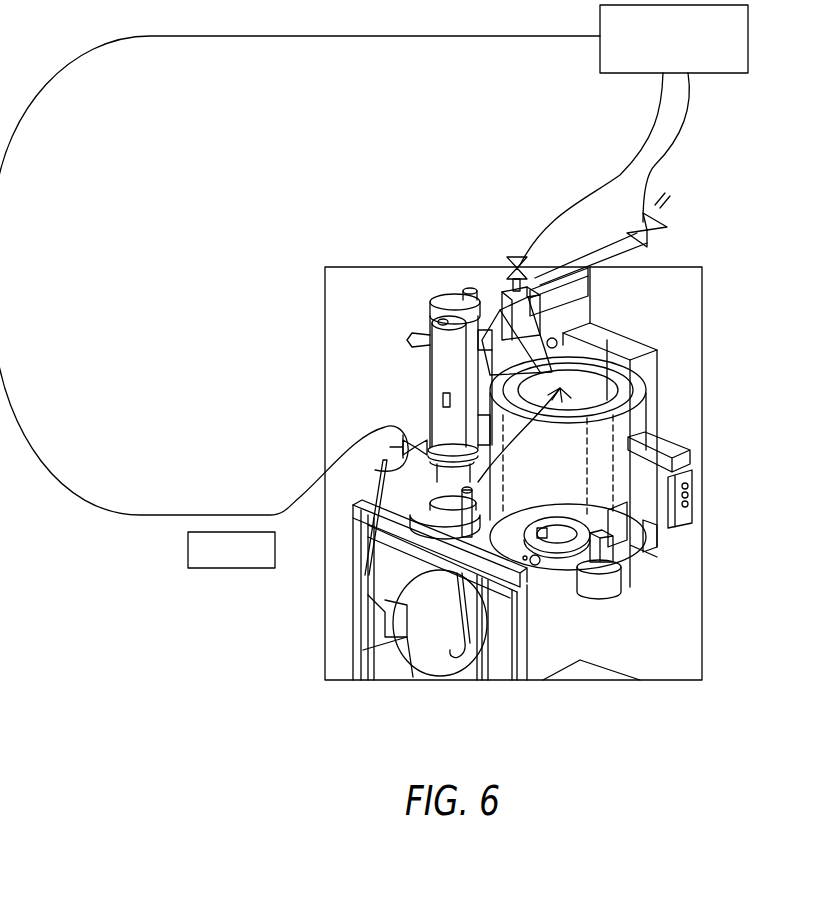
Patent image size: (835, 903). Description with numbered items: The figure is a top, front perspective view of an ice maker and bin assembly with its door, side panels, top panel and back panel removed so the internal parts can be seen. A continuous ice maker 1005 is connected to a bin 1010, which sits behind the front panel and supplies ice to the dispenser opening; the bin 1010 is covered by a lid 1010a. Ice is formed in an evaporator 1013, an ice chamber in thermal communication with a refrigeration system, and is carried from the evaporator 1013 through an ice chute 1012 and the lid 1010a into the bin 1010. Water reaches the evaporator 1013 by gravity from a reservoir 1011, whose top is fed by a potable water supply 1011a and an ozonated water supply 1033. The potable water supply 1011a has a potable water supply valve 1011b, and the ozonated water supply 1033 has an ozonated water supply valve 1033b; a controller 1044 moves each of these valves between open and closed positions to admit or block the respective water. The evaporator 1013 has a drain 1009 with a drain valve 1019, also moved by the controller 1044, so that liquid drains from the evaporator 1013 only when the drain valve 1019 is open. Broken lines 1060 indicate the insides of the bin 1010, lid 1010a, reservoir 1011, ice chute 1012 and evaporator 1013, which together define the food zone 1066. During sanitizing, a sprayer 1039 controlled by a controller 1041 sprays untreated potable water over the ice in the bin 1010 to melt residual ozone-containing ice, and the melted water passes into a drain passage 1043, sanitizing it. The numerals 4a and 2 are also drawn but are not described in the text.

The controller 1044 is at (674, 39).
The potable water supply valve 1011b is at (510, 257).
The reservoir 1011 is at (502, 298).
The potable water supply 1011a is at (540, 283).
The ozonated water supply 1033 is at (667, 206).
The ozonated water supply valve 1033b is at (667, 211).
The ice chute 1012 is at (453, 307).
The continuous ice maker 1005 is at (430, 350).
The broken lines 1060 is at (430, 380).
The evaporator 1013 is at (430, 410).
The drain 1009 is at (413, 440).
The drain valve 1019 is at (400, 457).
The controller 1041 is at (352, 505).
The food zone 1066 is at (427, 480).
The bin 1010 is at (620, 413).
The lid 1010a is at (560, 388).
The sprayer 1039 is at (632, 334).
The column / control panel 4a is at (657, 368).
The drain passage 1043 is at (558, 540).
The cup 2 is at (613, 587).